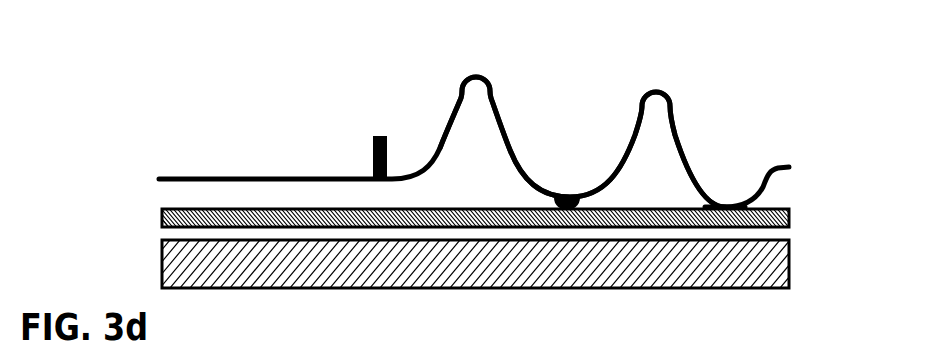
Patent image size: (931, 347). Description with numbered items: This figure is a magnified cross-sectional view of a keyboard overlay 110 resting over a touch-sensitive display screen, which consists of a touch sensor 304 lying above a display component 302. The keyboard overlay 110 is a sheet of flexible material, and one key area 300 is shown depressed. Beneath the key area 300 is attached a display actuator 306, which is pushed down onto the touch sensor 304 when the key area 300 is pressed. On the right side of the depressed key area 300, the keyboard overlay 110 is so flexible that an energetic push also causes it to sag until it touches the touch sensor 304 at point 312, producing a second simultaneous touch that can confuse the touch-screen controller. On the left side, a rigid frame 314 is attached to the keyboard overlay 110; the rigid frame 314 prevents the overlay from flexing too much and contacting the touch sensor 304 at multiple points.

The keyboard overlay 110 is at (198, 177).
The key area 300 is at (653, 92).
The display component 302 is at (162, 280).
The touch sensor 304 is at (162, 220).
The display actuator 306 is at (565, 196).
The point 312 is at (728, 204).
The rigid frame 314 is at (373, 158).